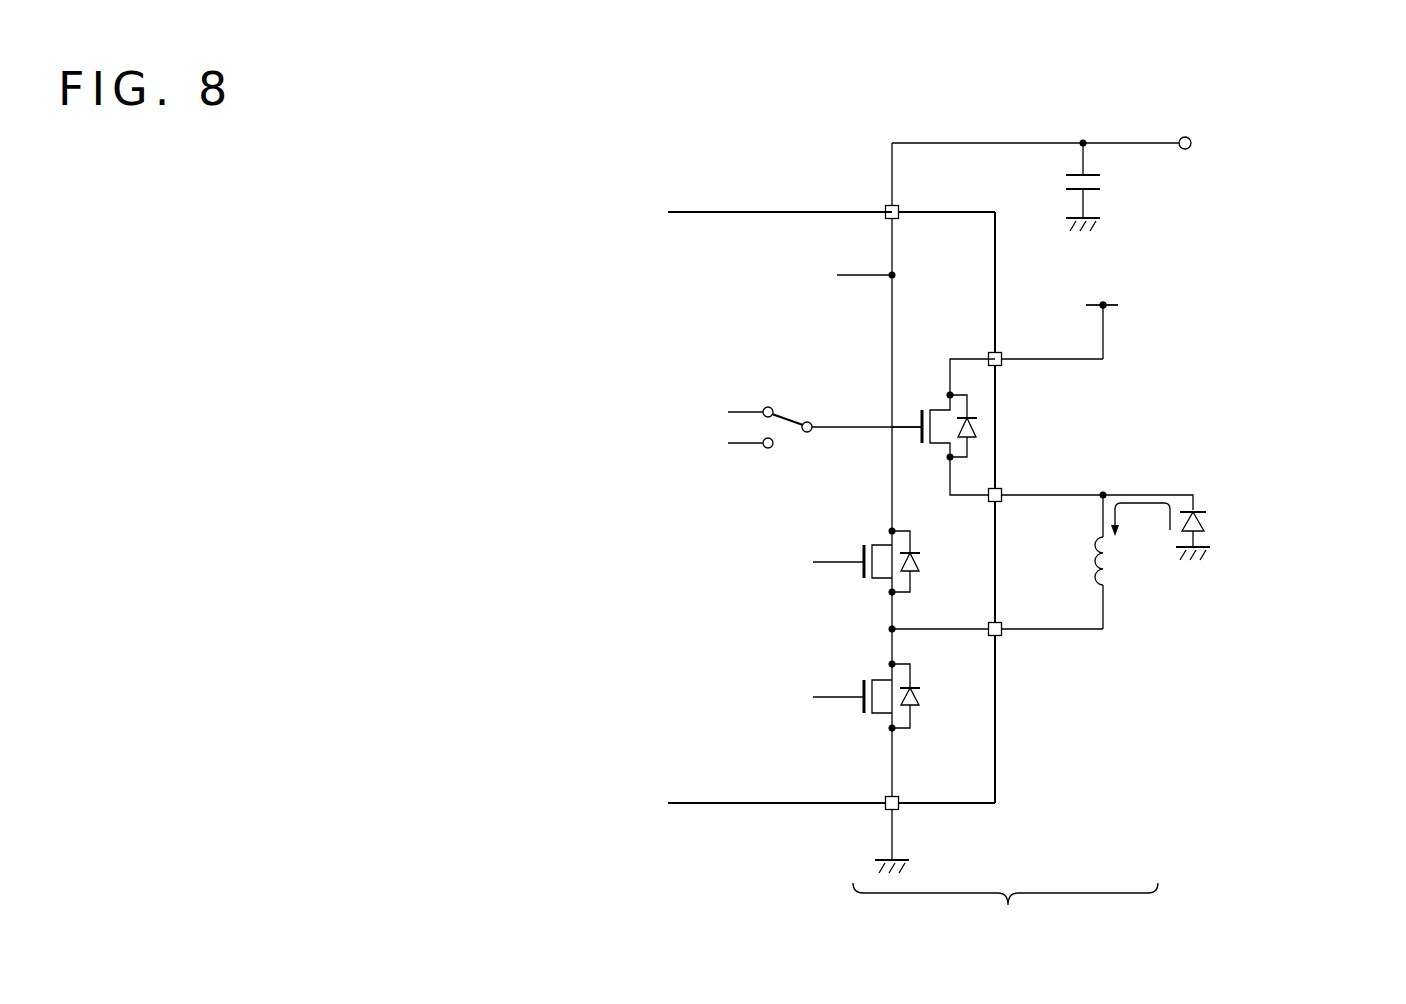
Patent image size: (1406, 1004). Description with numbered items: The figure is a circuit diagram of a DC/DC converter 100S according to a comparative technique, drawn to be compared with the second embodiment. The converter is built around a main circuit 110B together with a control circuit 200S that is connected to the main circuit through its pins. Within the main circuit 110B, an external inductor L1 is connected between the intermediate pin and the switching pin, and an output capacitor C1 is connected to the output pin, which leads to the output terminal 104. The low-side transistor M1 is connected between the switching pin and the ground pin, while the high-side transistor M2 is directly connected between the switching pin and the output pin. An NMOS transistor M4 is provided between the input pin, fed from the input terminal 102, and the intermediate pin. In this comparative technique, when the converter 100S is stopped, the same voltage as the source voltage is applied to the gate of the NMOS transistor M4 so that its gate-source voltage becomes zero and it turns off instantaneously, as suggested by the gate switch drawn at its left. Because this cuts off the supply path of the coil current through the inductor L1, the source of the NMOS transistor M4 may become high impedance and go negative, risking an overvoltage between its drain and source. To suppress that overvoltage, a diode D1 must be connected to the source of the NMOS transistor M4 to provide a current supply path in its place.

The DC/DC converter 100S is at (1392, 112).
The control circuit 200S is at (727, 212).
The output terminal 104 is at (1189, 138).
The input terminal 102 is at (1118, 305).
The main circuit 110B is at (1005, 912).
The output capacitor C1 is at (1103, 187).
The diode D1 is at (1208, 533).
The inductor L1 is at (1121, 562).
The low-side transistor M1 is at (924, 695).
The high-side transistor M2 is at (924, 560).
The NMOS transistor M4 is at (931, 406).